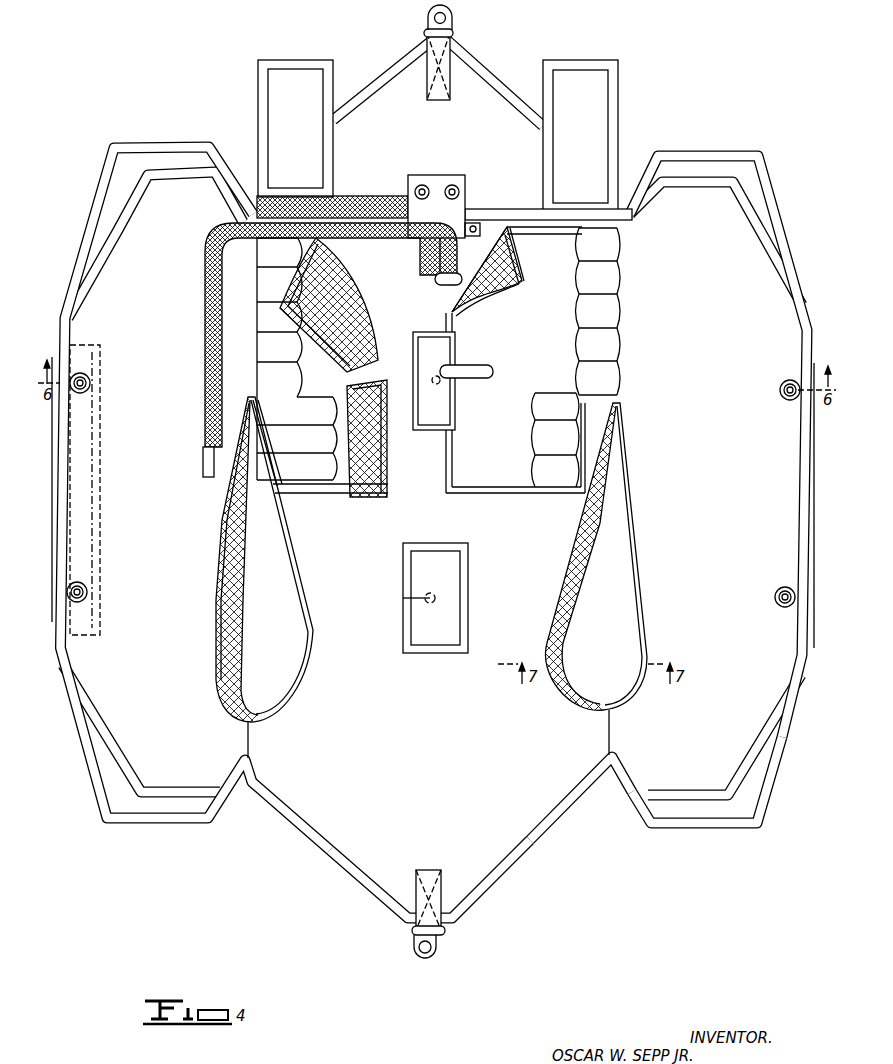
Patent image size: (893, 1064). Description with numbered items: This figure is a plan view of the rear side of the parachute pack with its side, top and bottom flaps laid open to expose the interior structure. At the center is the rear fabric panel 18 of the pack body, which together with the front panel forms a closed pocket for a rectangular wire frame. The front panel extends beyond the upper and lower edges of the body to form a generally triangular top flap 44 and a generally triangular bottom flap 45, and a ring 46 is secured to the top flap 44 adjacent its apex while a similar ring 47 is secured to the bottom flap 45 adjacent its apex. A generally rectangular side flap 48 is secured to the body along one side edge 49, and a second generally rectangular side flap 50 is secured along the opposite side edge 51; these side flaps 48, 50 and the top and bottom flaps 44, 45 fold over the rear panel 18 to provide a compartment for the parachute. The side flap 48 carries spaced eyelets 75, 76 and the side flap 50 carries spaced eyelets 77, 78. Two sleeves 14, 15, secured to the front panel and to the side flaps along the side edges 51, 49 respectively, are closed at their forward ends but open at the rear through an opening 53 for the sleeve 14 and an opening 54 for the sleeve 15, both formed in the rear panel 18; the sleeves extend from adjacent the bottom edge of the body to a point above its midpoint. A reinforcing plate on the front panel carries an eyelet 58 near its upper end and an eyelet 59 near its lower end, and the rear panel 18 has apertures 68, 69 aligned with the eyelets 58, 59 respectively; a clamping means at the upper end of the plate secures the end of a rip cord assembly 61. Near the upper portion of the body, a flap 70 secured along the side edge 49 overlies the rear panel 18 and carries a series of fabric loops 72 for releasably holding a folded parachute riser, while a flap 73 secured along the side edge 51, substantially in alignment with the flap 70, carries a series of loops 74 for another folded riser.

The sleeve 14 is at (578, 707).
The sleeve 15 is at (296, 696).
The rear fabric panel 18 is at (370, 606).
The top flap 44 is at (488, 72).
The bottom flap 45 is at (523, 853).
The ring 46 is at (452, 15).
The ring 47 is at (436, 947).
The side flap 48 is at (213, 781).
The side edge 49 is at (262, 345).
The side flap 50 is at (707, 784).
The side edge 51 is at (619, 393).
The opening 53 is at (550, 620).
The opening 54 is at (304, 630).
The eyelet 58 is at (435, 378).
The eyelet 59 is at (442, 591).
The rip cord assembly 61 is at (398, 240).
The aperture 68 is at (419, 398).
The aperture 69 is at (446, 603).
The flap 70 is at (378, 497).
The fabric loops 72 is at (262, 290).
The flap 73 is at (497, 493).
The loops 74 is at (619, 313).
The eyelet 75 is at (92, 383).
The eyelet 76 is at (88, 594).
The eyelet 77 is at (780, 391).
The eyelet 78 is at (775, 597).